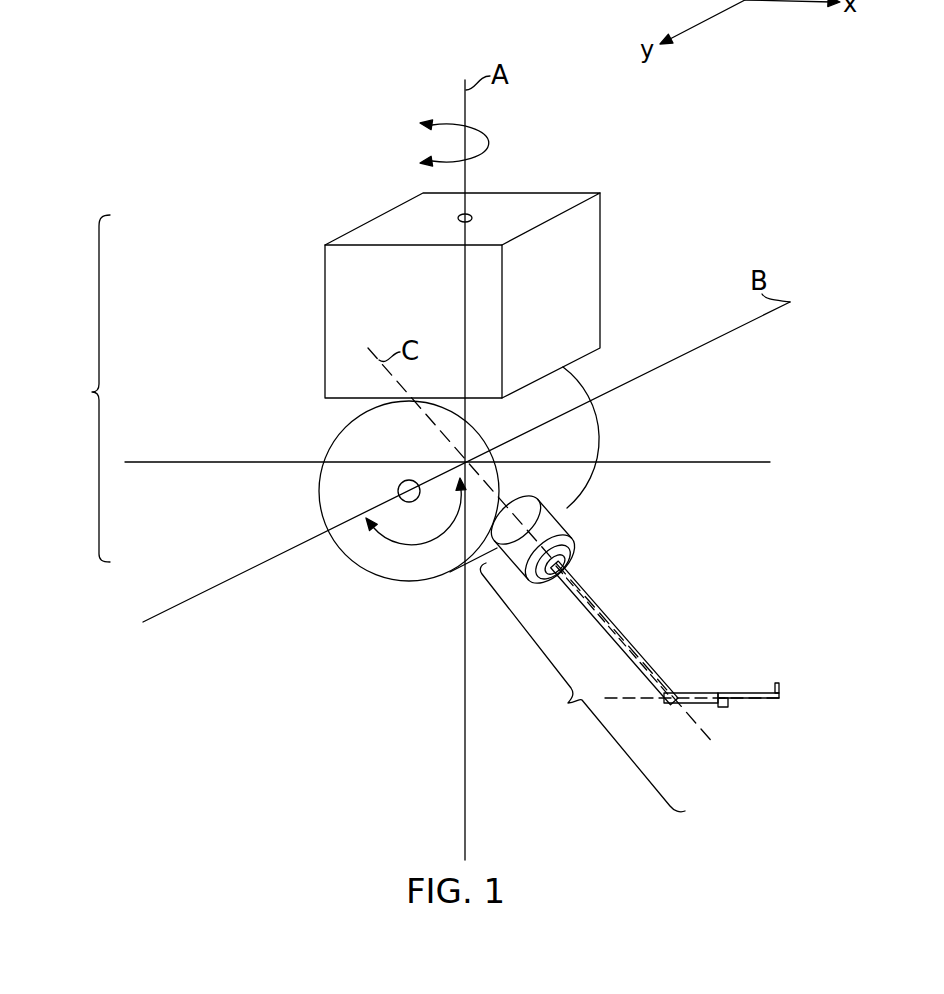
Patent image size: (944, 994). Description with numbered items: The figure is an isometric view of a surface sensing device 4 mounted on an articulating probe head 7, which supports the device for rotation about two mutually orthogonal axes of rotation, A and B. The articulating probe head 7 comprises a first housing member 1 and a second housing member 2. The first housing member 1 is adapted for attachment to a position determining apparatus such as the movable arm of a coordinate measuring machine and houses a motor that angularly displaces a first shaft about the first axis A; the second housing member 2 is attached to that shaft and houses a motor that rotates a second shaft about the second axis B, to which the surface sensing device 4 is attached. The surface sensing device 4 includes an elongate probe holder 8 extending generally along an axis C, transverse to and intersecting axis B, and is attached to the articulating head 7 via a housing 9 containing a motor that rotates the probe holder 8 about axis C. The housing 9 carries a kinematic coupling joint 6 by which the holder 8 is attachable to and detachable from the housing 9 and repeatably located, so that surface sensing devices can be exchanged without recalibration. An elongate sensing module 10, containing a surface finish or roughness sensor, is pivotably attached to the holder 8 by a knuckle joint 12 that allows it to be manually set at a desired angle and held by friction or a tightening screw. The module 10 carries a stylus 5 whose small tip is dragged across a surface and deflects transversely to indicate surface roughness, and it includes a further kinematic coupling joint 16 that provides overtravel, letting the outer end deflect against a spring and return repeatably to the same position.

The first housing member 1 is at (345, 357).
The second housing member 2 is at (372, 442).
The surface sensing device 4 is at (568, 703).
The stylus 5 is at (777, 683).
The kinematic coupling joint 6 is at (566, 536).
The articulating probe head 7 is at (92, 392).
The probe holder 8 is at (623, 630).
The housing 9 is at (549, 509).
The sensing module 10 is at (712, 692).
The knuckle joint 12 is at (672, 691).
The kinematic coupling joint 16 is at (722, 708).